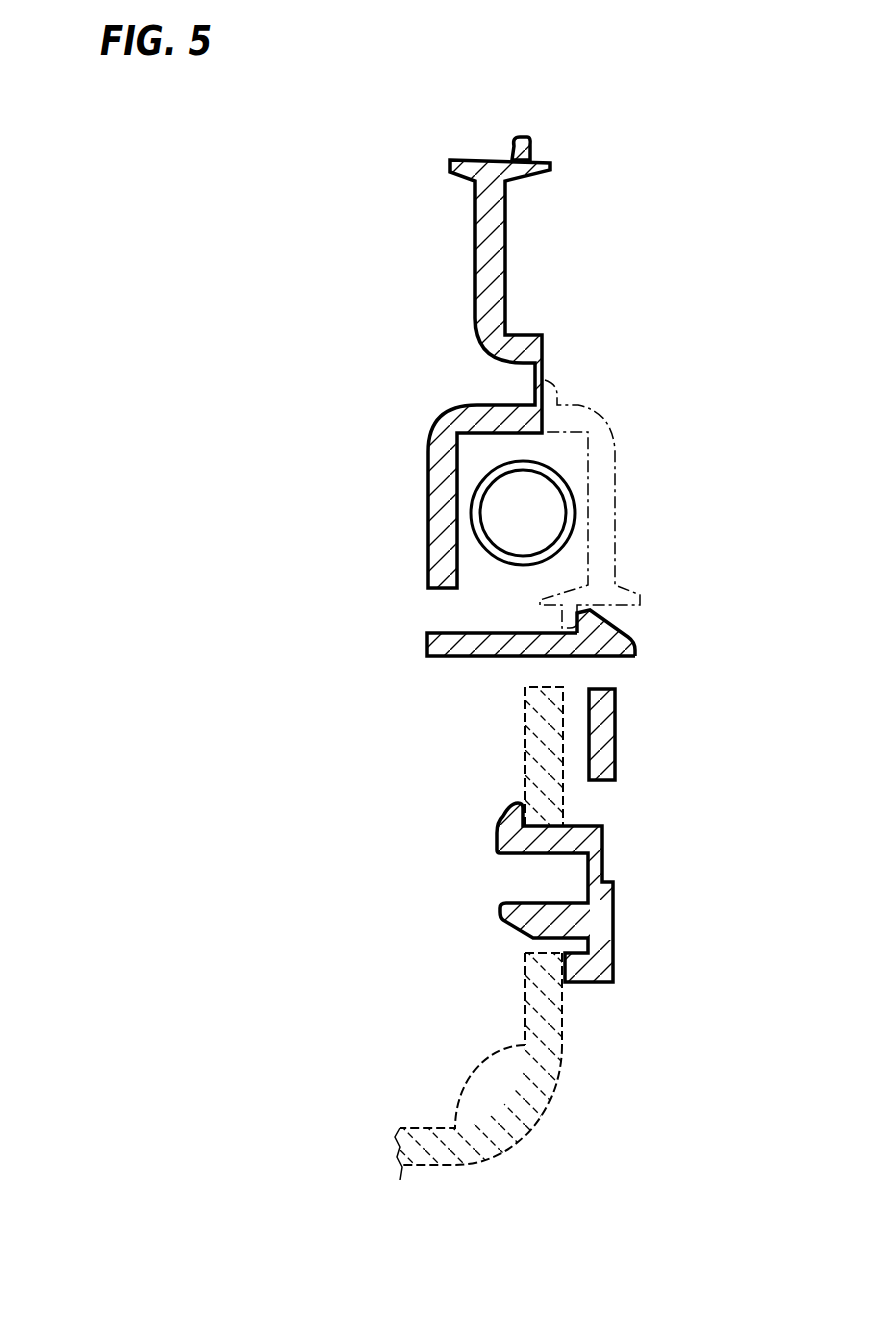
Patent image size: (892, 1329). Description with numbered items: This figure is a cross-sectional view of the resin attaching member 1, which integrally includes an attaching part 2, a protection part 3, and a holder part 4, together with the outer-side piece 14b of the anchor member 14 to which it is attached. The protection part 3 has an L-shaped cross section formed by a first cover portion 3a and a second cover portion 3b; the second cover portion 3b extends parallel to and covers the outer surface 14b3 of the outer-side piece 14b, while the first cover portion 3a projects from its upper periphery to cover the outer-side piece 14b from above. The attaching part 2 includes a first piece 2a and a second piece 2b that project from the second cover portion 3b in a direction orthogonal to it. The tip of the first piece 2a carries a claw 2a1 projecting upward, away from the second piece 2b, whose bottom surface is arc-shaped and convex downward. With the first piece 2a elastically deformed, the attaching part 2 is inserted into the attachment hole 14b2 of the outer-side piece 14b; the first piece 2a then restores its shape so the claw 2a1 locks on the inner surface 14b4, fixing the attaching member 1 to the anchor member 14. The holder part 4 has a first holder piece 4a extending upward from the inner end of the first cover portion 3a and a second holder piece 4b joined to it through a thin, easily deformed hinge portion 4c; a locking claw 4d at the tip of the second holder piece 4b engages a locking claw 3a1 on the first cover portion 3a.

The attaching member 1 is at (320, 298).
The attaching part 2 is at (488, 857).
The first piece 2a is at (578, 823).
The claw 2a1 is at (507, 810).
The second piece 2b is at (502, 920).
The protection part 3 is at (624, 677).
The first cover portion 3a is at (422, 625).
The locking claw 3a1 is at (597, 630).
The second cover portion 3b is at (617, 728).
The holder part 4 is at (422, 448).
The first holder piece 4a is at (432, 512).
The second holder piece 4b is at (475, 255).
The hinge portion 4c is at (543, 378).
The locking claw 4d is at (500, 162).
The anchor member 14 is at (482, 1056).
The outer-side piece 14b is at (503, 1088).
The attachment hole 14b2 is at (542, 950).
The outer surface 14b3 is at (562, 1032).
The inner surface 14b4 is at (525, 995).